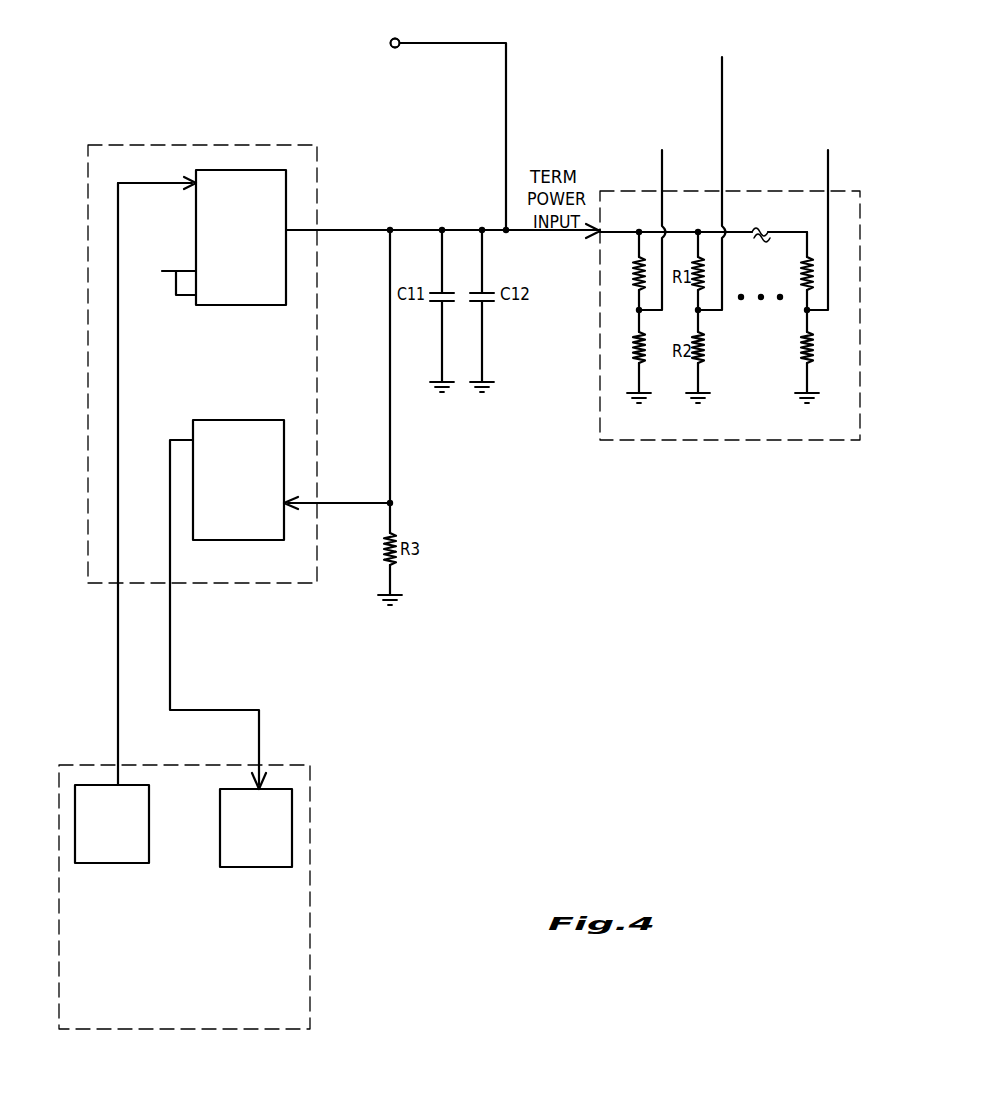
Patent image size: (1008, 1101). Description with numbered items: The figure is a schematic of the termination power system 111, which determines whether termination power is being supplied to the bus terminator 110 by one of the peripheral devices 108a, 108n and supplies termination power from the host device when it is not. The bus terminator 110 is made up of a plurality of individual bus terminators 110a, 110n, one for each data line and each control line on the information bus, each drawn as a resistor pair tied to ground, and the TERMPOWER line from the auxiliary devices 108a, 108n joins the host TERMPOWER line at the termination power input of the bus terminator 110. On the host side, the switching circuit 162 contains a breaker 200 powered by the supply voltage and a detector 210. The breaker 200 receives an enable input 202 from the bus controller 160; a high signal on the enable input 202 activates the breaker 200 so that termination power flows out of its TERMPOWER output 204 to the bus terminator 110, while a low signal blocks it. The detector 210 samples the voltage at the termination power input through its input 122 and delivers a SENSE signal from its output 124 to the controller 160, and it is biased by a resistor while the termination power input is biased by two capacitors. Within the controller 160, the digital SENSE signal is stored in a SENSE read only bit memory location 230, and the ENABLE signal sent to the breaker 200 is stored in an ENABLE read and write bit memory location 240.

The breaker 200 is at (253, 170).
The enable input 202 is at (190, 194).
The TERMPOWER output 204 is at (409, 233).
The detector 210 is at (251, 420).
The detector output 124 is at (198, 605).
The detector input 122 is at (306, 382).
The switching circuit 162 is at (230, 586).
The ENABLE read and write bit memory location 240 is at (149, 834).
The SENSE read only bit memory location 230 is at (220, 844).
The bus controller 160 is at (277, 1031).
The bus terminator 110 is at (805, 190).
The bus terminator 110a is at (618, 320).
The bus terminator 110n is at (825, 334).
The termination power system 111 is at (469, 631).
The peripheral device 108a is at (372, 120).
The peripheral device 108n is at (395, 43).